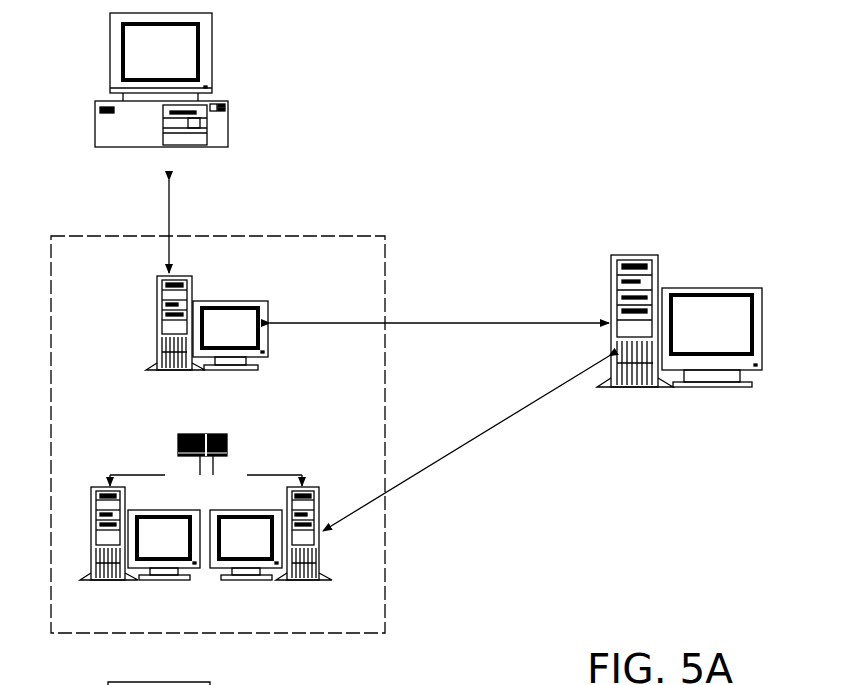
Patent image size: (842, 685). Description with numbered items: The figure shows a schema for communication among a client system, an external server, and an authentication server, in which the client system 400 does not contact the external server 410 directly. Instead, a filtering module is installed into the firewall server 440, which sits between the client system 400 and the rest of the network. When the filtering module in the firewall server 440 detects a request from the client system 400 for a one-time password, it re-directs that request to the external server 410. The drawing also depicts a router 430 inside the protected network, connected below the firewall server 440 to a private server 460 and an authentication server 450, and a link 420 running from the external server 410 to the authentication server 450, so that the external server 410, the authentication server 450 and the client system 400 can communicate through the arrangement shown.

The client system 400 is at (228, 113).
The external server 410 is at (660, 270).
The communication link between external server and authentication server 420 is at (385, 517).
The router 430 is at (230, 453).
The firewall server 440 is at (192, 295).
The authentication server 450 is at (320, 492).
The private server 460 is at (90, 503).